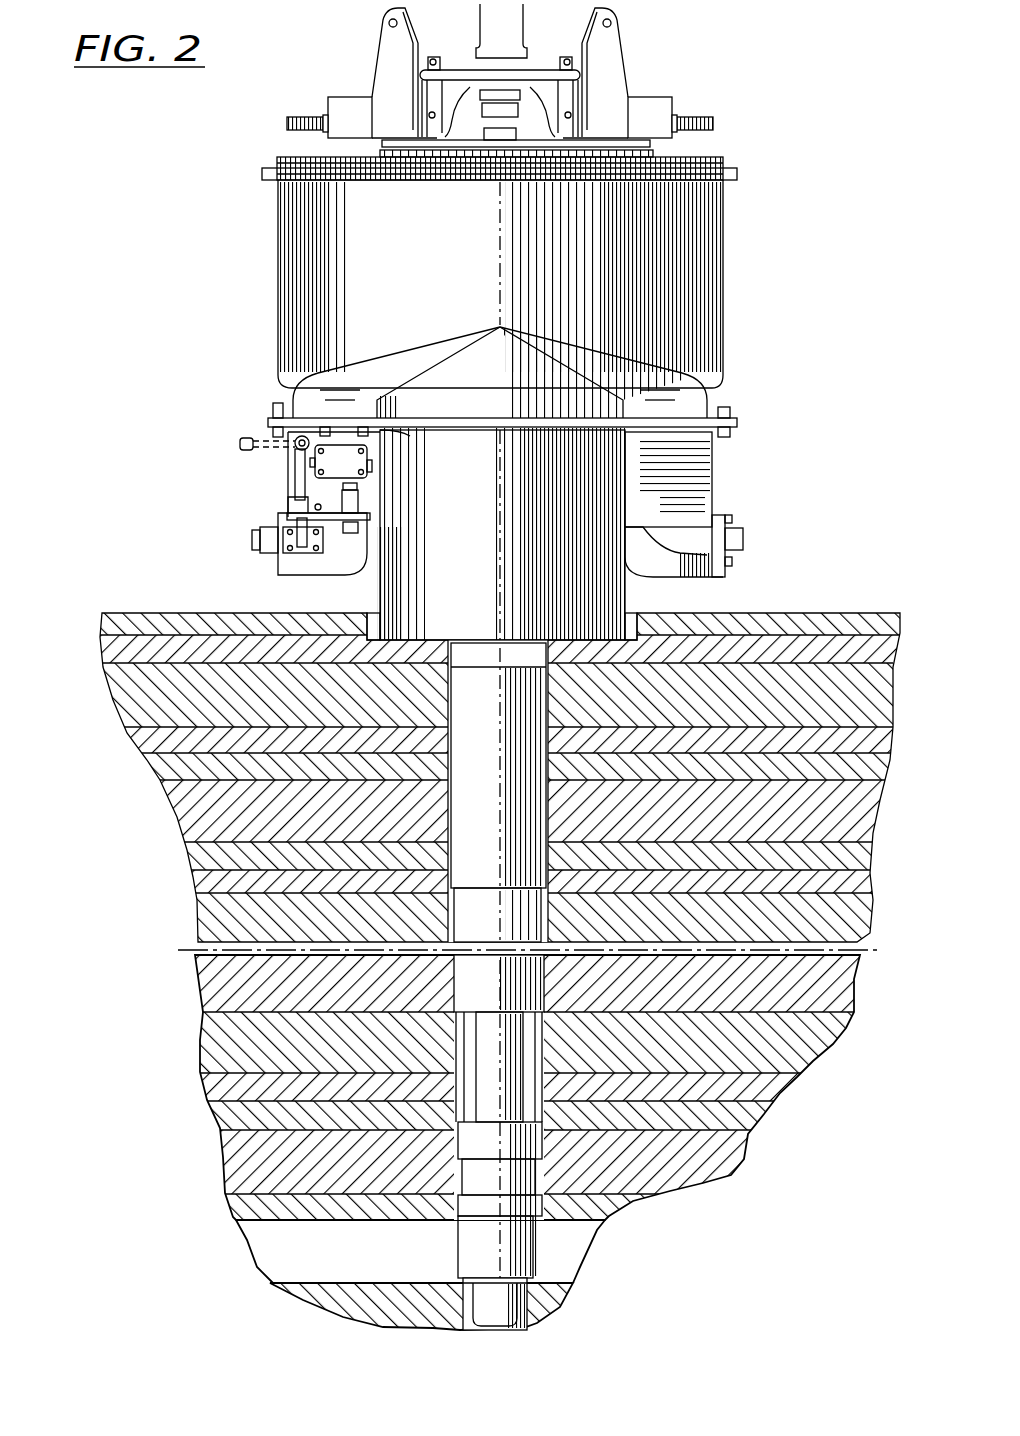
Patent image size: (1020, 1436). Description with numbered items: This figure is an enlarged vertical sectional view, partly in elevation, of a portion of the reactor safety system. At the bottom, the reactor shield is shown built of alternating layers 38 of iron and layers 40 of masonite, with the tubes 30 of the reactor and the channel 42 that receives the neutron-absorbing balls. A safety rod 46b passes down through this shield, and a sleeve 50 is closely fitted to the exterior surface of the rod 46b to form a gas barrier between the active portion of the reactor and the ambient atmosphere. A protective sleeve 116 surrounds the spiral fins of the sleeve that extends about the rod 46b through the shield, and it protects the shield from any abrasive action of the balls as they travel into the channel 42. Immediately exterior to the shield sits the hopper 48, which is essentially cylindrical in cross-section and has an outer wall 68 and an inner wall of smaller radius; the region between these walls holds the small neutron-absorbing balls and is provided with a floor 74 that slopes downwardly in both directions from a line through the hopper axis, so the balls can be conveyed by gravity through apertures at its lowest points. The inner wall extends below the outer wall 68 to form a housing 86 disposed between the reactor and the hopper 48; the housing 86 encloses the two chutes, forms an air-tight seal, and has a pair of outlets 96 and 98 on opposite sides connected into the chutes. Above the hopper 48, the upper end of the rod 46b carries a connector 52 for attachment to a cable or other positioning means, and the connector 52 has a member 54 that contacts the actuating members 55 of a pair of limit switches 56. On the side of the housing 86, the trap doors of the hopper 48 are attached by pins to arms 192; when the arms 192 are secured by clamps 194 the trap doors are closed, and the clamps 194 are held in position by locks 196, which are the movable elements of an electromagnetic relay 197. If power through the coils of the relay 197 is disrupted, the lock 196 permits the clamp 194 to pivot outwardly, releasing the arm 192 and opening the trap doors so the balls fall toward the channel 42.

The tubes 30 is at (500, 931).
The layers 38 is at (135, 690).
The layers 40 is at (150, 740).
The channel 42 is at (468, 1290).
The safety rod 46b is at (490, 1306).
The hopper 48 is at (447, 269).
The sleeve 50 is at (527, 1300).
The connector 52 is at (512, 28).
The member 54 is at (458, 50).
The actuating members 55 is at (414, 27).
The limit switches 56 is at (343, 100).
The outer wall 68 is at (325, 282).
The floor 74 is at (388, 380).
The housing 86 is at (459, 509).
The outlet 96 is at (742, 542).
The outlet 98 is at (270, 536).
The protective sleeve 116 is at (497, 779).
The arms 192 is at (295, 455).
The clamps 194 is at (330, 521).
The locks 196 is at (302, 548).
The electromagnetic relay 197 is at (320, 560).